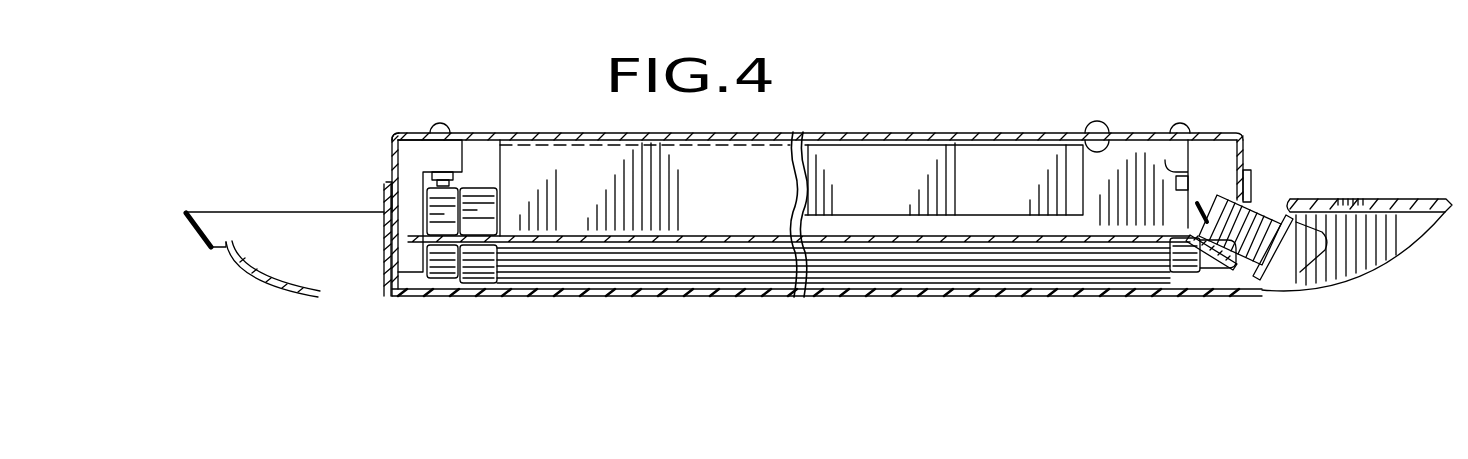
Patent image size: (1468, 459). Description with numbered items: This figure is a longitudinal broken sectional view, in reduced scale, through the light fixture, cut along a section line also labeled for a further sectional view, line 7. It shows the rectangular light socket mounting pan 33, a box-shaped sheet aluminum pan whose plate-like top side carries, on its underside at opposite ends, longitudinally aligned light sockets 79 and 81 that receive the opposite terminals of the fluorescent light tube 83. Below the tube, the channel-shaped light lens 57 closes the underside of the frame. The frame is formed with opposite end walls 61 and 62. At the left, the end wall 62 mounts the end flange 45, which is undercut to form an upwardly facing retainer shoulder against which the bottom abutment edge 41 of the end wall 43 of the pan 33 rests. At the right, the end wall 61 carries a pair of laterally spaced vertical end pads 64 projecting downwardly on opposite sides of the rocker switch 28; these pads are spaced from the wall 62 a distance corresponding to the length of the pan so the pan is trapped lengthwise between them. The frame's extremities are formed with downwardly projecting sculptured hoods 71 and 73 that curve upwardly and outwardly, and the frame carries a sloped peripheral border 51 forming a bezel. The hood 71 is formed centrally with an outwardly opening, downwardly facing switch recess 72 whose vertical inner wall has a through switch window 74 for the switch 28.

The section line 7- 7 is at (407, 72).
The light socket mounting pan 33 is at (979, 128).
The light lens 57 is at (846, 294).
The end wall 43 is at (391, 160).
The light socket 79 is at (393, 133).
The end flange 45 is at (388, 188).
The end wall 62 is at (384, 255).
The peripheral border 51 is at (184, 212).
The sculptured hood 73 is at (266, 290).
The bottom abutment edge 41 is at (400, 210).
The fluorescent light tube 83 is at (672, 262).
The light socket 81 is at (1245, 152).
The end wall 61 is at (1251, 186).
The switch window 74 is at (1280, 234).
The vertical end pad 64 is at (1236, 270).
The rocker switch 28 is at (1284, 272).
The switch recess 72 is at (1390, 233).
The sculptured hood 71 is at (1358, 281).